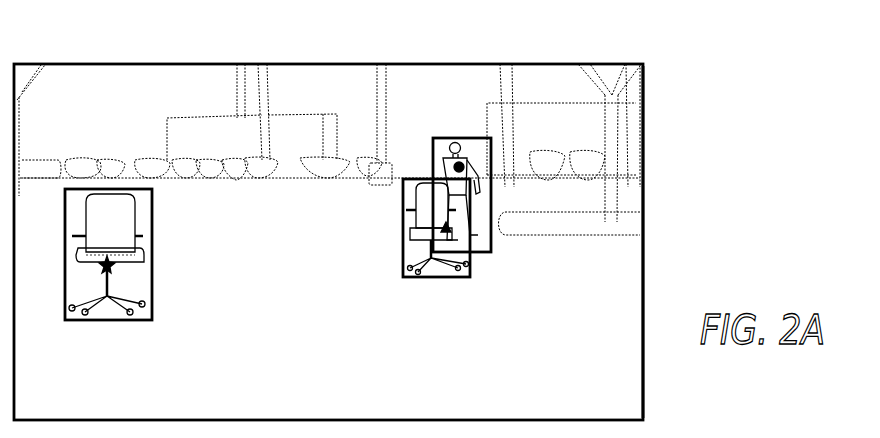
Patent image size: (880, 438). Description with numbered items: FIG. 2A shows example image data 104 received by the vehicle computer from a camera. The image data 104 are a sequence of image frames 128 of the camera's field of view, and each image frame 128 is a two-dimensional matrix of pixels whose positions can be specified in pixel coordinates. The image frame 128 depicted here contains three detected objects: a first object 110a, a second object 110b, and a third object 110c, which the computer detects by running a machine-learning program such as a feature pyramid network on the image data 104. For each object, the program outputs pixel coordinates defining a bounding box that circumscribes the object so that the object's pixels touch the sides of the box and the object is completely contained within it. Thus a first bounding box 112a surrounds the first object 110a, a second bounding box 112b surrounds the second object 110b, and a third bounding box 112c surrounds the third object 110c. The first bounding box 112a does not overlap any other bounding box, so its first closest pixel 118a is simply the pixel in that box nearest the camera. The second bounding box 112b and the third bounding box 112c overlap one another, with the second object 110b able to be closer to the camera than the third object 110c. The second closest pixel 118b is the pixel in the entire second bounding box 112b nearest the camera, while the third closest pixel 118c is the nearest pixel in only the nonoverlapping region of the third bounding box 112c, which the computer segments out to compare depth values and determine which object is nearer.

The image data 104 is at (676, 99).
The image frame 128 is at (645, 165).
The first object 110a is at (120, 207).
The second object 110b is at (413, 200).
The third object 110c is at (450, 146).
The first bounding box 112a is at (133, 321).
The second bounding box 112b is at (420, 279).
The third bounding box 112c is at (496, 244).
The first closest pixel 118a is at (112, 266).
The second closest pixel 118b is at (462, 278).
The third closest pixel 118c is at (465, 165).